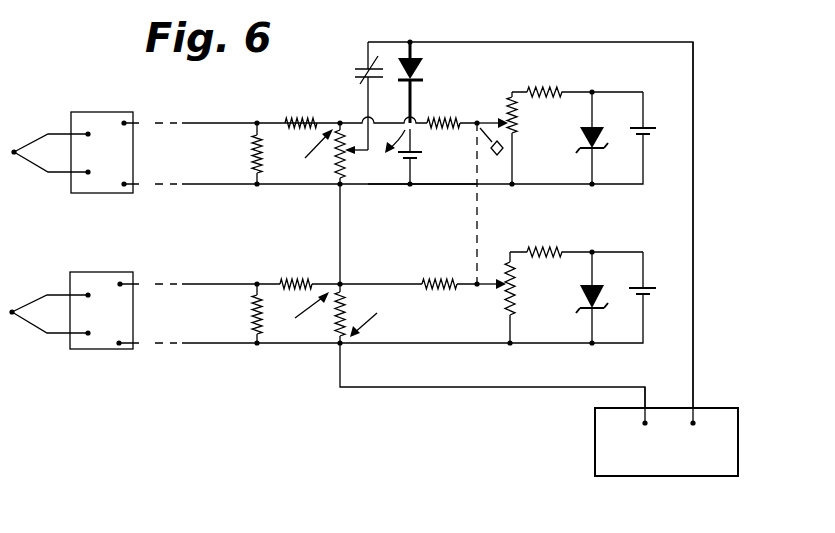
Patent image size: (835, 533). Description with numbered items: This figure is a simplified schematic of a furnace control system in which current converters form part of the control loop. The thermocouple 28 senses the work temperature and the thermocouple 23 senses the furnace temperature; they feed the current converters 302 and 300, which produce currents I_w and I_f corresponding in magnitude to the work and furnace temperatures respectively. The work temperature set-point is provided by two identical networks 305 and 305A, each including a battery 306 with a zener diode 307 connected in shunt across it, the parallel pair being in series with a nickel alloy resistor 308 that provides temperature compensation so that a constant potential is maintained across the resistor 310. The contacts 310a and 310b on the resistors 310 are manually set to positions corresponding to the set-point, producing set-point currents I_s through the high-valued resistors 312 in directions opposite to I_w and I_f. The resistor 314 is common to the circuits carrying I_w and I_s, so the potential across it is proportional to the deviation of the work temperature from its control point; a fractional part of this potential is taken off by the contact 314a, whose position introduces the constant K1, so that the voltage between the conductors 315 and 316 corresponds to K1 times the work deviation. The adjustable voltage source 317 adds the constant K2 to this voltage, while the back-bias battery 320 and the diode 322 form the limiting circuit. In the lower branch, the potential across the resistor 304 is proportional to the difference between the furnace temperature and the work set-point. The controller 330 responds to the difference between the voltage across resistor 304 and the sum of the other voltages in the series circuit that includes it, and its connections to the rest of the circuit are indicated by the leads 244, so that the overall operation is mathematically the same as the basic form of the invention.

The thermocouple 28 is at (33, 135).
The thermocouple 23 is at (34, 296).
The current converter 302 is at (100, 112).
The current converter 300 is at (110, 272).
The resistor 314 is at (292, 230).
The contact 314a is at (364, 179).
The resistor 304 is at (328, 315).
The conductor 315 is at (368, 107).
The adjustable voltage source 317 is at (362, 62).
The diode 322 is at (424, 73).
The back-bias battery 320 is at (425, 157).
The conductor 316 is at (445, 186).
The high-valued resistor 312 is at (453, 120).
The resistor 310 is at (517, 133).
The contact 310a is at (478, 122).
The contact 310b is at (487, 287).
The resistor 308 is at (555, 90).
The battery 306 is at (657, 128).
The zener diode 307 is at (608, 148).
The network 305 is at (578, 173).
The network 305A is at (577, 333).
The controller 330 is at (683, 471).
The controller connection cable 244 is at (607, 500).